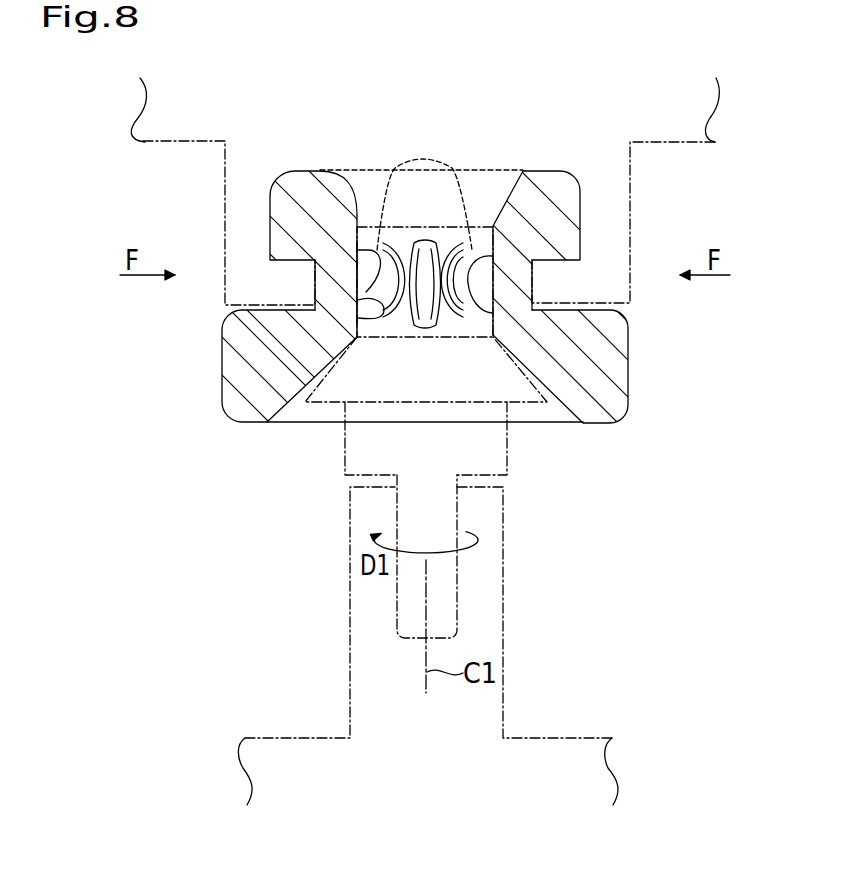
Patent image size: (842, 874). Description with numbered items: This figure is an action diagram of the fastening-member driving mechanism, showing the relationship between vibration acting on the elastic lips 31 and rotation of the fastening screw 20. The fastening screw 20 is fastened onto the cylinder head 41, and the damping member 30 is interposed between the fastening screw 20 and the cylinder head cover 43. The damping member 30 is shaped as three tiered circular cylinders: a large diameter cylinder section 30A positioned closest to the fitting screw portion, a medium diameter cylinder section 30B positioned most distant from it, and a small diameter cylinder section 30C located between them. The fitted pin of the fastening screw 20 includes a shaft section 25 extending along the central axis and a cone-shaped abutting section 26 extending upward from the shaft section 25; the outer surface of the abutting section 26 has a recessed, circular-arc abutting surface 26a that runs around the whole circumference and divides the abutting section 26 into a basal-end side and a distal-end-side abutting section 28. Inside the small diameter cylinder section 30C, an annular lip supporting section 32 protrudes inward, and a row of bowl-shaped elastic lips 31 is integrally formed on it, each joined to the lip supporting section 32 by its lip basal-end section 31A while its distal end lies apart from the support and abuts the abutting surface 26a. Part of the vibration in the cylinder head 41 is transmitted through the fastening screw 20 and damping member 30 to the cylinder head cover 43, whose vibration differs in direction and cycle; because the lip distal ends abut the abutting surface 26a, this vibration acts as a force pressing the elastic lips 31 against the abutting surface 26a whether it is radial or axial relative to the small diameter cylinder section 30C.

The fastening screw 20 is at (433, 319).
The shaft section 25 is at (457, 590).
The abutting section 26 is at (323, 403).
The abutting surface 26a is at (380, 281).
The distal-end-side abutting section 28 is at (430, 156).
The damping member 30 is at (457, 317).
The large diameter cylinder section 30A is at (629, 366).
The medium diameter cylinder section 30B is at (582, 212).
The small diameter cylinder section 30C is at (535, 280).
The elastic lips 31 is at (477, 250).
The lip basal-end section 31A is at (438, 248).
The lip supporting section 32 is at (365, 320).
The cylinder head 41 is at (567, 738).
The cylinder head cover 43 is at (713, 142).